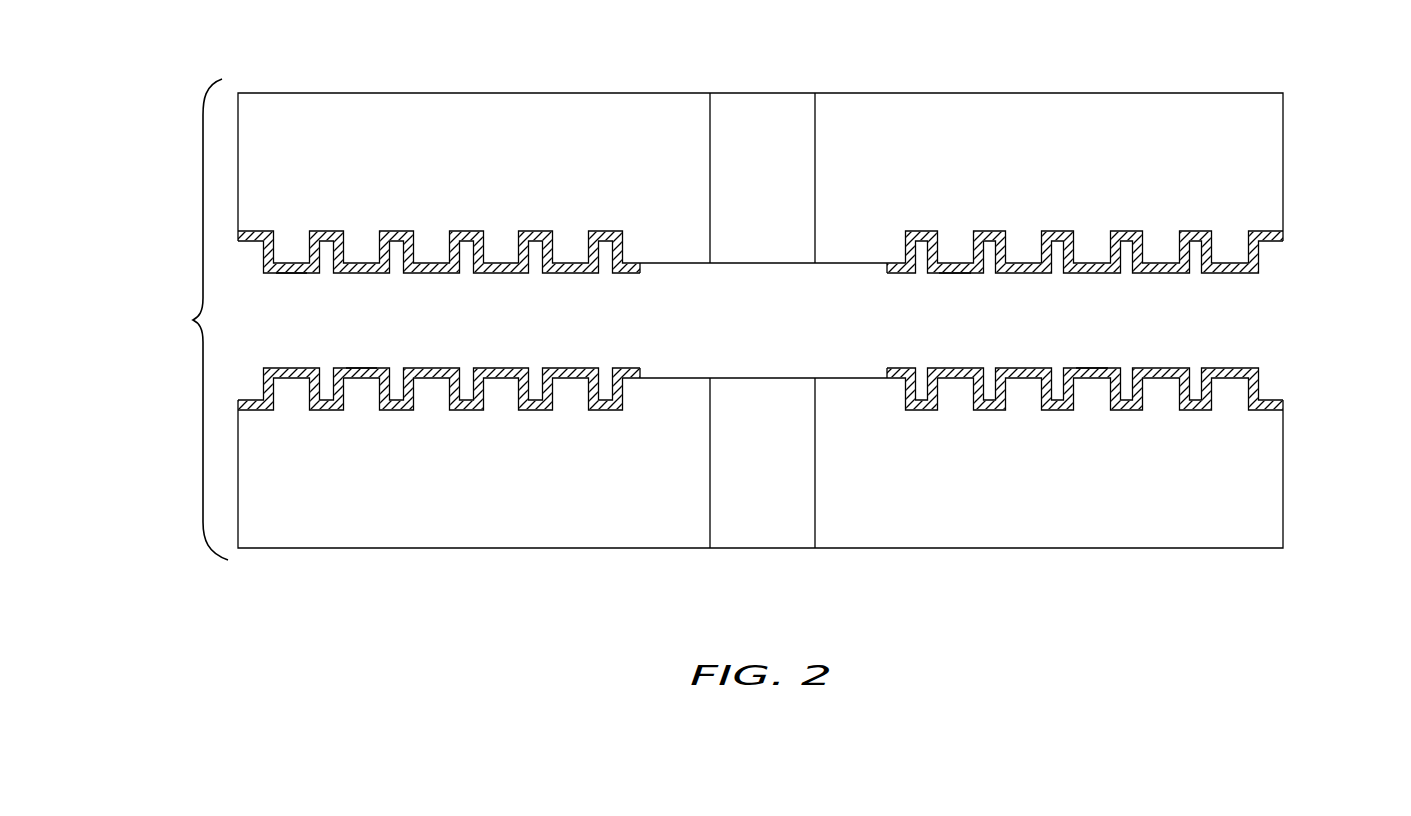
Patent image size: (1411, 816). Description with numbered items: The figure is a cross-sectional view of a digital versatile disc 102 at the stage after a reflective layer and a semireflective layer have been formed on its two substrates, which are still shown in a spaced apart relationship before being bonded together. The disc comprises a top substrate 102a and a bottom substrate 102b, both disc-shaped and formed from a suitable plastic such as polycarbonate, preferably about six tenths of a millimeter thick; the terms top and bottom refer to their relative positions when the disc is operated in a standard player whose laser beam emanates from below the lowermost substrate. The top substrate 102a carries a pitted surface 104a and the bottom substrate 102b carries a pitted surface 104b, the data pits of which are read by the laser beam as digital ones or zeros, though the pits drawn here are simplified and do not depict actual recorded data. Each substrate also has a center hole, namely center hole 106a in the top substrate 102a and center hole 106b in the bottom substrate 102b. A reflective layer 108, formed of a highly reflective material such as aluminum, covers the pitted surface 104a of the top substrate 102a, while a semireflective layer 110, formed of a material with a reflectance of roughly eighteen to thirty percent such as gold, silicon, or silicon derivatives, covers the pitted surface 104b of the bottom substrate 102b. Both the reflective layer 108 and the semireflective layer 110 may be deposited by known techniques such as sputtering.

The digital versatile disc 102 is at (189, 319).
The top substrate 102a is at (1272, 167).
The bottom substrate 102b is at (1268, 485).
The pitted surface 104a is at (320, 242).
The pitted surface 104b is at (398, 413).
The center hole 106a is at (766, 106).
The center hole 106b is at (759, 386).
The reflective layer 108 is at (288, 273).
The semireflective layer 110 is at (362, 370).